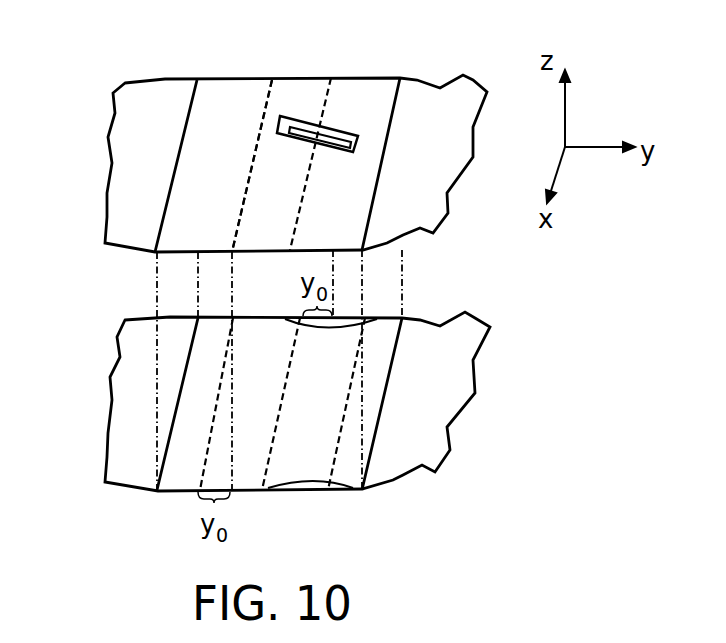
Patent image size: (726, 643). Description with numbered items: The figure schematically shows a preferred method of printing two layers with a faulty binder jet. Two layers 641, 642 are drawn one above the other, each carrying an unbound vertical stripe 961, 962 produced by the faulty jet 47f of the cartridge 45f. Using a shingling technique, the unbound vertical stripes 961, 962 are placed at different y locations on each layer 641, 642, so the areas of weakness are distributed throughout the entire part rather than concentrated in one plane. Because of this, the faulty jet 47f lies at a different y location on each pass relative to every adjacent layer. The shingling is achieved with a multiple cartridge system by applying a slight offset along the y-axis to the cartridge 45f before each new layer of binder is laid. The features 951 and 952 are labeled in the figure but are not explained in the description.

The layer 642 is at (128, 162).
The layer 641 is at (130, 402).
The unbound vertical stripe 962 is at (330, 93).
The unbound vertical stripe 961 is at (348, 390).
The track of second layer 952 is at (268, 62).
The track of first layer 951 is at (320, 506).
The cartridge 45f is at (289, 138).
The faulty jet 47f is at (327, 135).